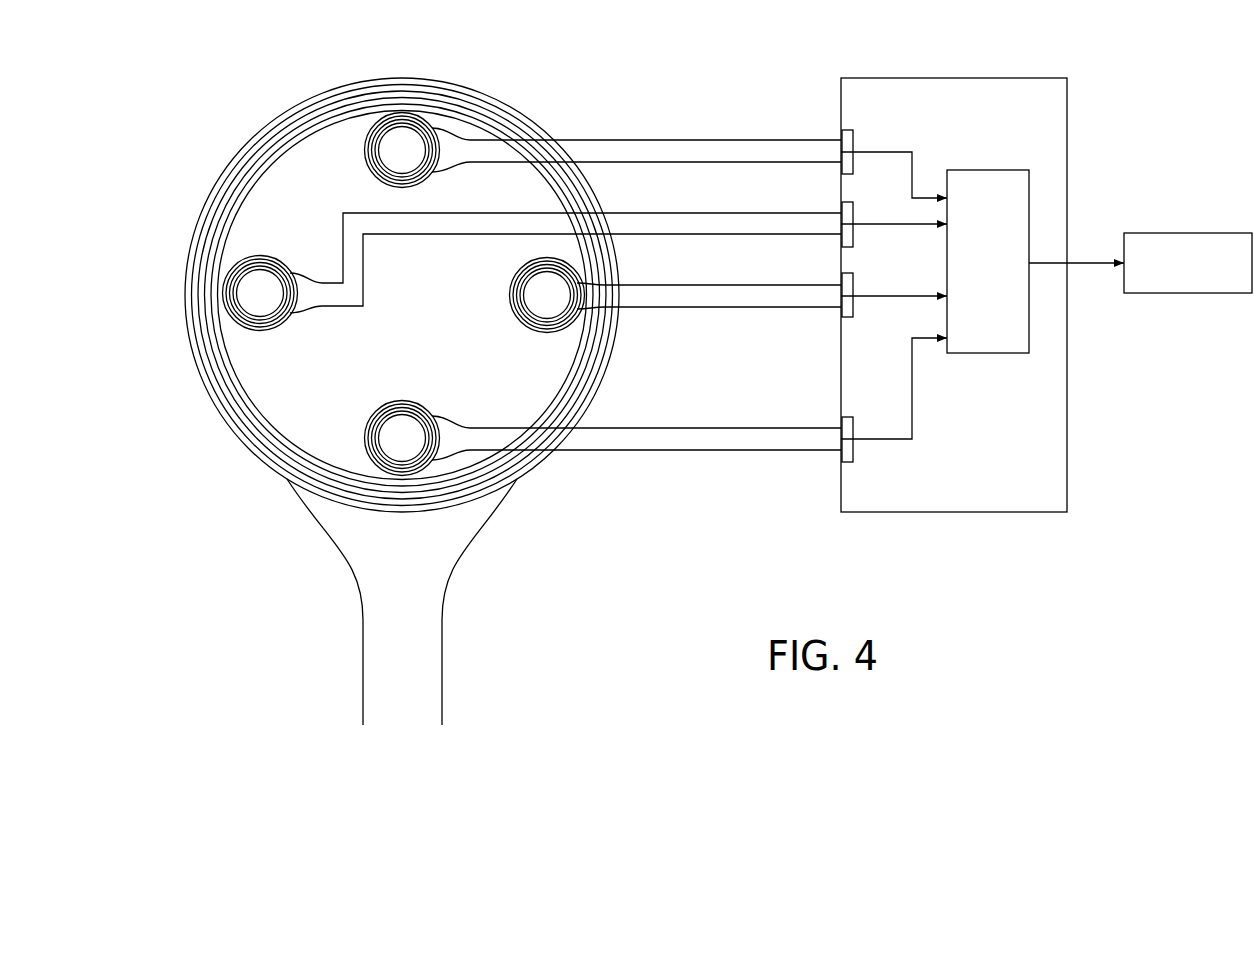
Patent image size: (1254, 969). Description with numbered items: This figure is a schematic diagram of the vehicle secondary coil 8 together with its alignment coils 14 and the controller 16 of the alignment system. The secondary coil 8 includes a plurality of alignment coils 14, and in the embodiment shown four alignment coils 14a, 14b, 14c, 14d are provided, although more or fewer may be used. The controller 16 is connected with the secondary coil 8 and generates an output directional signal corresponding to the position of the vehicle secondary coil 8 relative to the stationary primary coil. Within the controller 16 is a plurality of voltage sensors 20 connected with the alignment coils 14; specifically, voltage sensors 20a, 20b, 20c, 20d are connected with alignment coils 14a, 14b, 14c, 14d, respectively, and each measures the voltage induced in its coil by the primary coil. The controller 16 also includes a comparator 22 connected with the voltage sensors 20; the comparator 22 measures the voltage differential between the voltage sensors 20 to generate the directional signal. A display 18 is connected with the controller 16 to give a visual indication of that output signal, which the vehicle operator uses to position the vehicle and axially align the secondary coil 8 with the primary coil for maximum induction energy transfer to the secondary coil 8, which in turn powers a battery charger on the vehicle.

The vehicle secondary coil 8 is at (449, 514).
The alignment coils 14 is at (404, 249).
The alignment coil 14a is at (365, 152).
The alignment coil 14b is at (518, 319).
The alignment coil 14c is at (365, 425).
The alignment coil 14d is at (258, 257).
The controller 16 is at (1053, 445).
The display 18 is at (1197, 240).
The voltage sensors 20 is at (857, 269).
The voltage sensor 20a is at (851, 140).
The voltage sensor 20b is at (851, 290).
The voltage sensor 20c is at (852, 428).
The voltage sensor 20d is at (852, 217).
The comparator 22 is at (1014, 191).